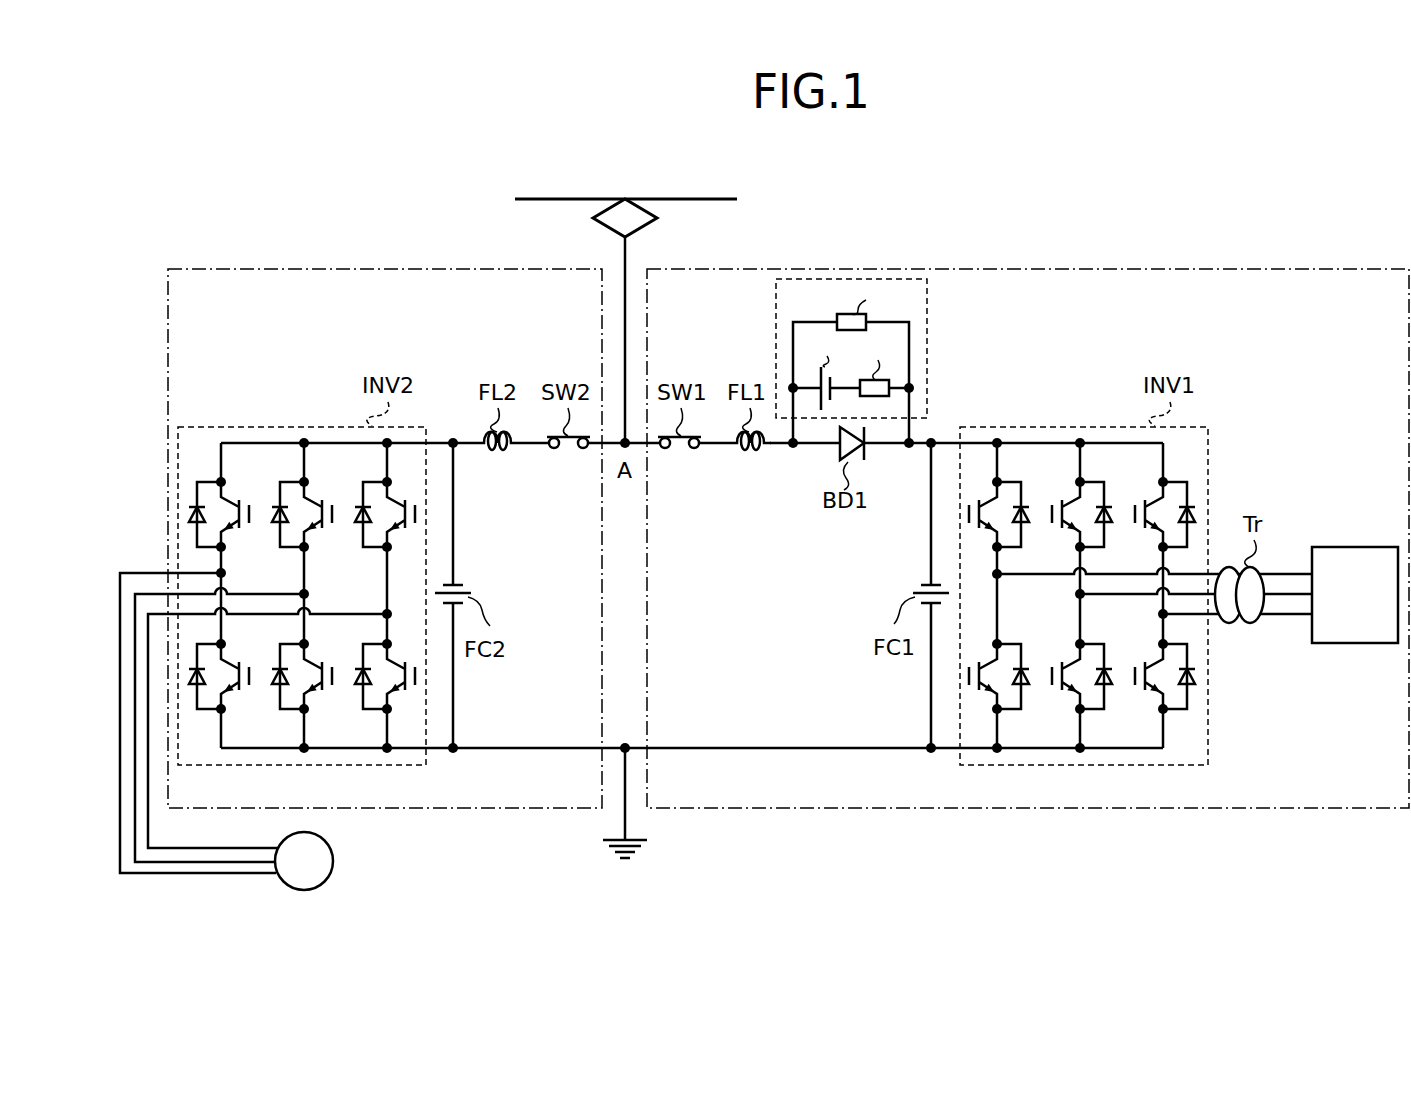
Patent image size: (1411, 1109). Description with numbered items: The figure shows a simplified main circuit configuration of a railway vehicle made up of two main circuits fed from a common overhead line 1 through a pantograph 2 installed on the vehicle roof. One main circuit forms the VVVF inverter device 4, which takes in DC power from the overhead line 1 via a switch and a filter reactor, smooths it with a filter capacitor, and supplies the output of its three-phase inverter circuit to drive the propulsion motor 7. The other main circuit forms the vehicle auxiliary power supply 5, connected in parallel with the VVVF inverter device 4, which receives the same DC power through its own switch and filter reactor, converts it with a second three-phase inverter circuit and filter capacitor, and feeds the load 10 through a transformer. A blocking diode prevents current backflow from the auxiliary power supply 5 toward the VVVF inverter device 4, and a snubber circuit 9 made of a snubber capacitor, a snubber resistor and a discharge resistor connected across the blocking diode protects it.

The overhead line 1 is at (700, 199).
The pantograph 2 is at (655, 221).
The VVVF inverter device 4 is at (514, 810).
The vehicle auxiliary power supply 5 is at (1300, 810).
The propulsion motor 7 is at (334, 862).
The snubber circuit 9 is at (928, 333).
The load 10 is at (1348, 547).